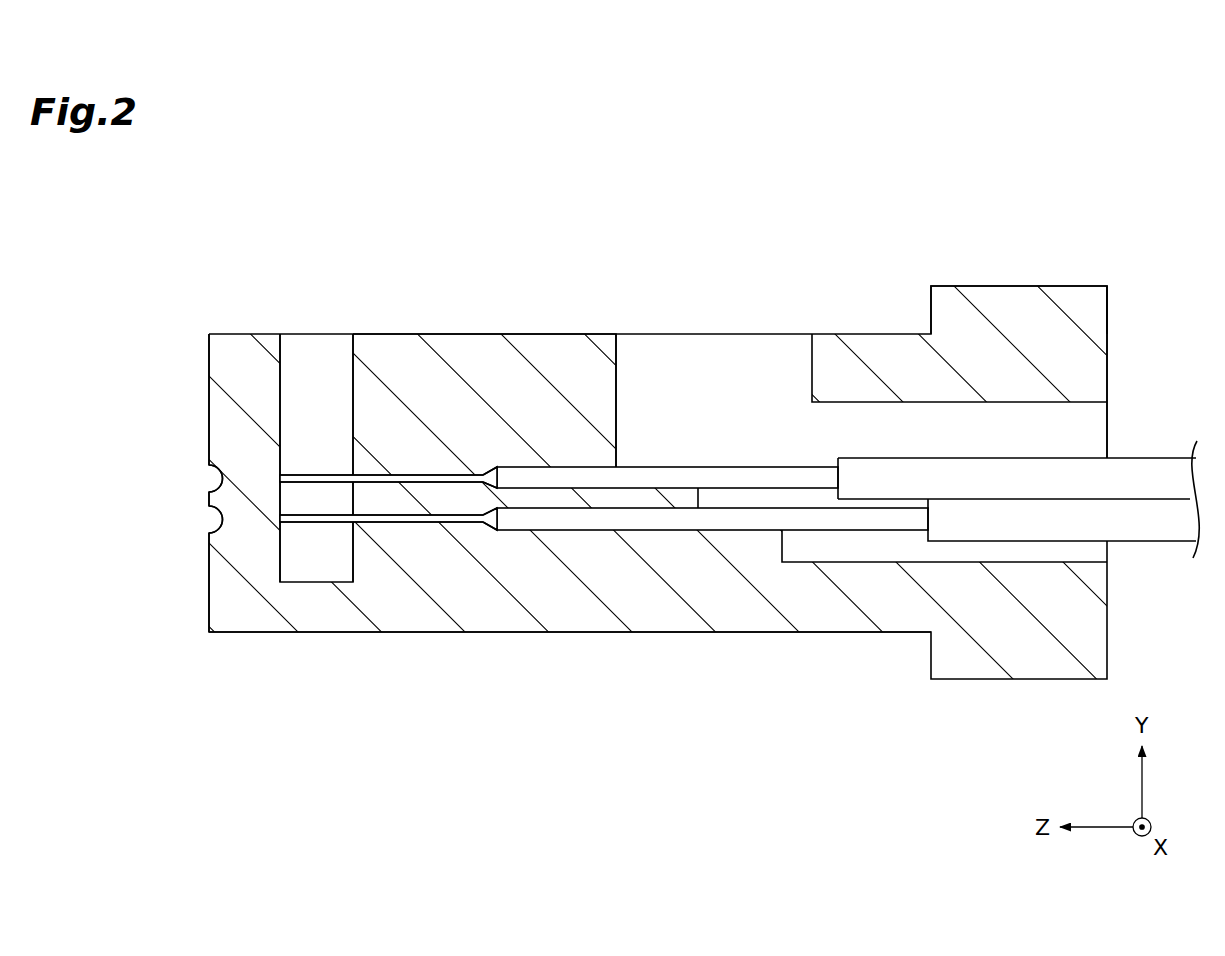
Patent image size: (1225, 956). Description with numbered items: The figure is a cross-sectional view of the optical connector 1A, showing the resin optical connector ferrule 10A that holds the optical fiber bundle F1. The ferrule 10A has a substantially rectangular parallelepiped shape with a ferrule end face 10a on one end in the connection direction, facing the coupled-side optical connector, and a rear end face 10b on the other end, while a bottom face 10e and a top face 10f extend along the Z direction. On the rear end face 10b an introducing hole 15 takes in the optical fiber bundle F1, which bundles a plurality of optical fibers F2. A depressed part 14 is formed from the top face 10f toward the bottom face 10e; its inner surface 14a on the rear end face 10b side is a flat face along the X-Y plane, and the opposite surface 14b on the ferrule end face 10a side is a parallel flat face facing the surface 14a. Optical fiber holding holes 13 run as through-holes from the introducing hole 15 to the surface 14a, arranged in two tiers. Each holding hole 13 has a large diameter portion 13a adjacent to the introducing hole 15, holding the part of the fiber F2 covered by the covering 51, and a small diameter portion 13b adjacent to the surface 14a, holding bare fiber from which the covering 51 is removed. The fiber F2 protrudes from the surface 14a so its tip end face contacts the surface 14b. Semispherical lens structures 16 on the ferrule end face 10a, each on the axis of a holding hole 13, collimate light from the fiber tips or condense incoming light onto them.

The optical connector 1A is at (992, 187).
The optical connector ferrule 10A is at (1038, 285).
The ferrule end face 10a is at (210, 582).
The rear end face 10b is at (1108, 328).
The bottom face 10e is at (588, 633).
The top face 10f is at (522, 333).
The optical fiber holding hole 13 is at (553, 695).
The large diameter portion 13a is at (568, 520).
The small diameter portion 13b is at (437, 522).
The depressed part 14 is at (317, 358).
The surface 14a is at (353, 366).
The surface 14b is at (281, 396).
The introducing hole 15 is at (1087, 437).
The lens structure 16 is at (196, 524).
The covering 51 is at (765, 512).
The optical fiber bundle F1 is at (1153, 456).
The optical fiber F2 is at (678, 500).